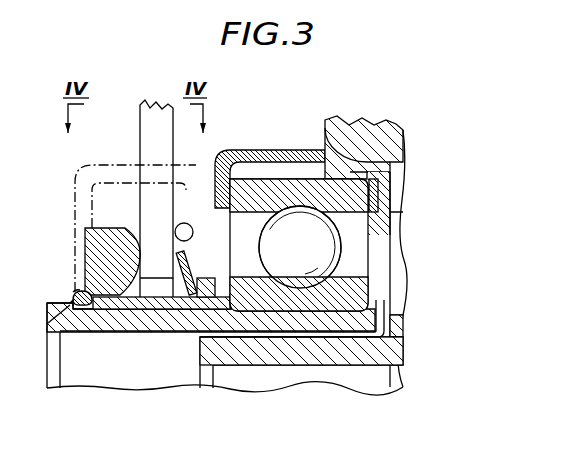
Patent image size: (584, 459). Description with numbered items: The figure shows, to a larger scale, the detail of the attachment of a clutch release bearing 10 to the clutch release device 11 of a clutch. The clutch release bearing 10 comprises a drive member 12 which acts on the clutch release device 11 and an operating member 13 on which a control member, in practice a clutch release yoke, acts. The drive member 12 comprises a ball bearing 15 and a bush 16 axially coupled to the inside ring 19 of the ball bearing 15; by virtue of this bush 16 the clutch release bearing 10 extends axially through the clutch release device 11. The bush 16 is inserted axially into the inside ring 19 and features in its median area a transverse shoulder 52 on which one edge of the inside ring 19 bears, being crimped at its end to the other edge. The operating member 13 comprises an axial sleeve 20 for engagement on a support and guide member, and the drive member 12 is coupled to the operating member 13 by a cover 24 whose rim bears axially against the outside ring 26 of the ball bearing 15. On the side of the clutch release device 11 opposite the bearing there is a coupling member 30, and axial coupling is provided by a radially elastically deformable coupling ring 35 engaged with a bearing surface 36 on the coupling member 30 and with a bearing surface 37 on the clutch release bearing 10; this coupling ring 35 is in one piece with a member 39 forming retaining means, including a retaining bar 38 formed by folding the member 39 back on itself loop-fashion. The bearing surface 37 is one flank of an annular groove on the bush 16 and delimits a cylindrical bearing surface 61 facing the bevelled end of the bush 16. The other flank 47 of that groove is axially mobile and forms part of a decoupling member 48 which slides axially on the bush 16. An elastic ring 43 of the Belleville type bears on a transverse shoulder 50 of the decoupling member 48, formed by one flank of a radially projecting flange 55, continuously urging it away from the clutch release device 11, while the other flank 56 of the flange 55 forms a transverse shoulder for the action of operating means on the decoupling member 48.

The clutch release bearing 10 is at (366, 110).
The clutch release device 11 is at (145, 104).
The drive member 12 is at (125, 337).
The operating member 13 is at (403, 146).
The ball bearing 15 is at (289, 176).
The bush 16 is at (79, 336).
The inside ring 19 is at (303, 300).
The axial sleeve 20 is at (350, 352).
The cover 24 is at (221, 147).
The outside ring 26 is at (253, 178).
The coupling member 30 is at (82, 240).
The coupling ring 35 is at (68, 304).
The bearing surface 36 is at (75, 291).
The bearing surface 37 is at (77, 311).
The retaining bar 38 is at (187, 222).
The member 39 is at (75, 182).
The elastic ring 43 is at (166, 302).
The flank 47 is at (100, 313).
The decoupling member 48 is at (156, 294).
The transverse shoulder 50 is at (203, 300).
The transverse shoulder 52 is at (242, 282).
The flange 55 is at (201, 279).
The flank 56 is at (221, 300).
The cylindrical bearing surface 61 is at (72, 297).